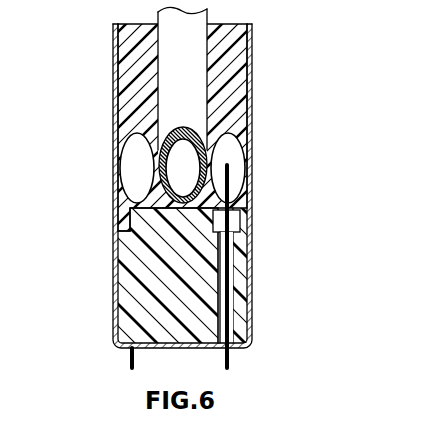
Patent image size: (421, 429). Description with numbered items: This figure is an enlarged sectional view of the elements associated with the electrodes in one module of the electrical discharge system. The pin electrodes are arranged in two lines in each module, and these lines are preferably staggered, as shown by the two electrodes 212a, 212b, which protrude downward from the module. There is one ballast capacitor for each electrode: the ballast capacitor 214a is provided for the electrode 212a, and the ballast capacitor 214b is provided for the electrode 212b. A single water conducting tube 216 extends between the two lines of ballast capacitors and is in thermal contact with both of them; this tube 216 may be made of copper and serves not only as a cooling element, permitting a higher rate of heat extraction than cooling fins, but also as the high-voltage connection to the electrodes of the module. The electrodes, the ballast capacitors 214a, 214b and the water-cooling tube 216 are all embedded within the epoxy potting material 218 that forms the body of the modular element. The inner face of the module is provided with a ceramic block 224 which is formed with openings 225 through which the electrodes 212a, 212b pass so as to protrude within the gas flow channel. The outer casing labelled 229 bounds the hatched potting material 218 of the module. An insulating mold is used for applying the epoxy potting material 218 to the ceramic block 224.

The epoxy potting material 218 is at (113, 60).
The housing body 229 is at (256, 46).
The water conducting tube 216 is at (188, 127).
The ballast capacitor 214a is at (131, 168).
The ballast capacitor 214b is at (240, 164).
The ceramic block 224 is at (250, 255).
The opening 225 is at (226, 289).
The electrode 212a is at (129, 360).
The electrode 212b is at (232, 353).